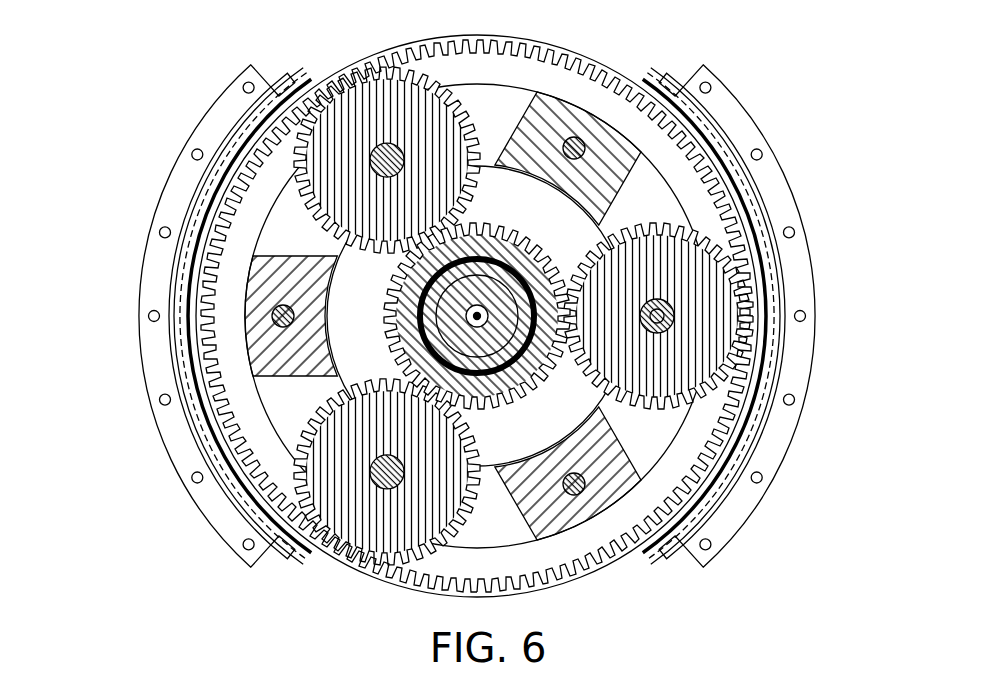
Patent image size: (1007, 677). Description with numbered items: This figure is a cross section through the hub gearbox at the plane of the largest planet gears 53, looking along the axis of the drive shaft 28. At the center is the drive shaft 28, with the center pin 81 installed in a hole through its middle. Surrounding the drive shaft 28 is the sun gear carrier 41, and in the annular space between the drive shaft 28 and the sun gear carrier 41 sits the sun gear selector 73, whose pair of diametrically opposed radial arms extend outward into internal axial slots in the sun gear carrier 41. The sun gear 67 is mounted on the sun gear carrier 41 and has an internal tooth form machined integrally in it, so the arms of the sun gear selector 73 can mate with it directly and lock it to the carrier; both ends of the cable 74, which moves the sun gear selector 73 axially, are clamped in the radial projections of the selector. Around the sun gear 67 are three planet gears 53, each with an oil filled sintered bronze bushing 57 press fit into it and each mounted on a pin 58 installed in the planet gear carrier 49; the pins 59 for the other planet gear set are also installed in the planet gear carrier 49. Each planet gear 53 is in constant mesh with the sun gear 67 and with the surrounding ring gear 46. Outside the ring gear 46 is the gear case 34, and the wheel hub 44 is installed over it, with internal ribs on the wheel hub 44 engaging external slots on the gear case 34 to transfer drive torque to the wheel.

The drive shaft 28 is at (458, 329).
The gear case 34 is at (188, 300).
The sun gear carrier 41 is at (531, 262).
The wheel hub 44 is at (175, 273).
The ring gear 46 is at (587, 53).
The planet gear carrier 49 is at (626, 171).
The planet gear 53 is at (470, 101).
The oil filled sintered bronze bushing 57 is at (673, 312).
The pin 58 is at (388, 147).
The pin 59 is at (582, 138).
The sun gear 67 is at (521, 409).
The sun gear selector 73 is at (397, 297).
The cable 74 is at (479, 313).
The center pin 81 is at (507, 266).